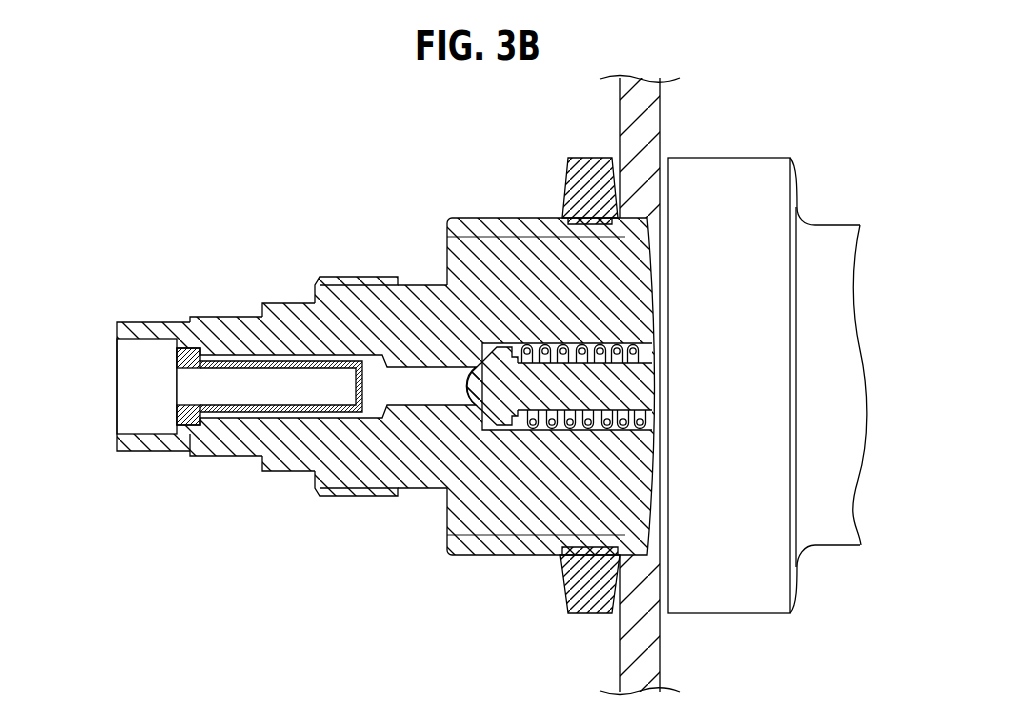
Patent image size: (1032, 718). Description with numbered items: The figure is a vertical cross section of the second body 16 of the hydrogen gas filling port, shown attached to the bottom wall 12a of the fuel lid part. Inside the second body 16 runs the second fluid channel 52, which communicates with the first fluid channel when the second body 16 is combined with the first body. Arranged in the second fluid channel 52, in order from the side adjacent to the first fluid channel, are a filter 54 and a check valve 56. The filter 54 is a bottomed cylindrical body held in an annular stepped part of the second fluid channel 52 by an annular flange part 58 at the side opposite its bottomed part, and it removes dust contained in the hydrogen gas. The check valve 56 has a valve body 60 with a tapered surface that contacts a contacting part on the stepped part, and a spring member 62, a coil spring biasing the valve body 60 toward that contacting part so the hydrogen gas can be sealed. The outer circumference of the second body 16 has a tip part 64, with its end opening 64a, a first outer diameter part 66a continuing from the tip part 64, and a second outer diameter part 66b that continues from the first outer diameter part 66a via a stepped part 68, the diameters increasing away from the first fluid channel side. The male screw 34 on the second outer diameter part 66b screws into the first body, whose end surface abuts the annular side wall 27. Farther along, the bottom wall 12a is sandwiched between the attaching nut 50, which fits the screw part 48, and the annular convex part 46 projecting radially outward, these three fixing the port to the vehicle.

The bottom wall 12a is at (628, 107).
The second body 16 is at (348, 183).
The annular side wall 27 is at (445, 217).
The male screw 34 is at (360, 496).
The annular convex part 46 is at (740, 158).
The screw part 48 is at (480, 217).
The attaching nut 50 is at (590, 158).
The second fluid channel 52 is at (288, 386).
The filter 54 is at (243, 413).
The check valve 56 is at (496, 384).
The annular flange part 58 is at (191, 426).
The valve body 60 is at (497, 432).
The spring member 62 is at (553, 385).
The tip part 64 is at (131, 452).
The end cap opening 64a is at (117, 452).
The first outer diameter part 66a is at (227, 317).
The second outer diameter part 66b is at (420, 284).
The stepped part 68 is at (293, 303).